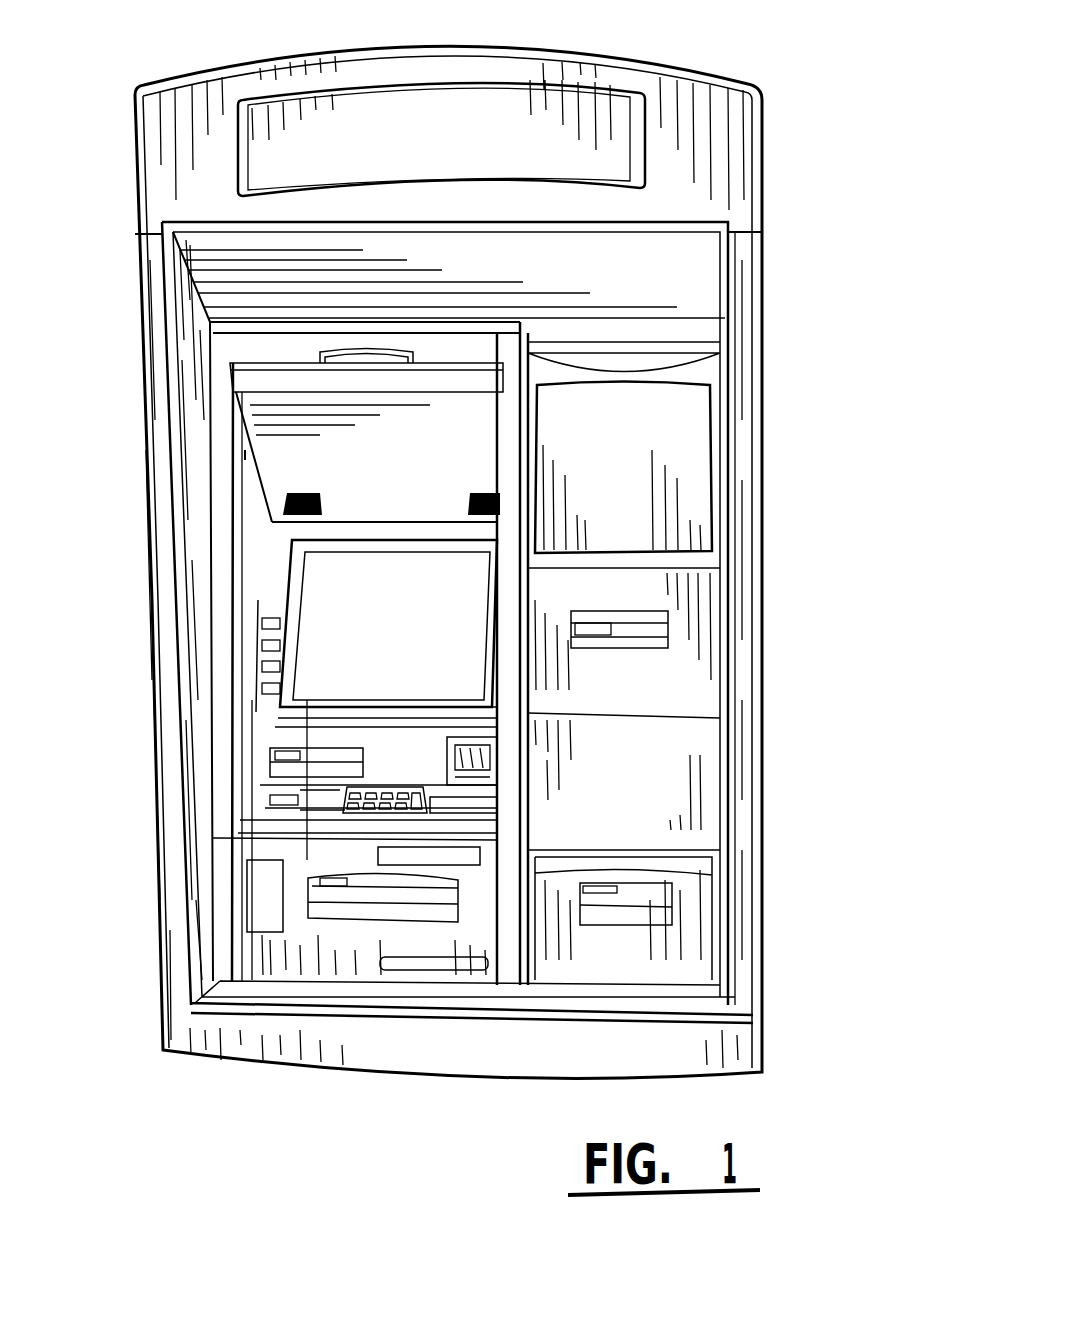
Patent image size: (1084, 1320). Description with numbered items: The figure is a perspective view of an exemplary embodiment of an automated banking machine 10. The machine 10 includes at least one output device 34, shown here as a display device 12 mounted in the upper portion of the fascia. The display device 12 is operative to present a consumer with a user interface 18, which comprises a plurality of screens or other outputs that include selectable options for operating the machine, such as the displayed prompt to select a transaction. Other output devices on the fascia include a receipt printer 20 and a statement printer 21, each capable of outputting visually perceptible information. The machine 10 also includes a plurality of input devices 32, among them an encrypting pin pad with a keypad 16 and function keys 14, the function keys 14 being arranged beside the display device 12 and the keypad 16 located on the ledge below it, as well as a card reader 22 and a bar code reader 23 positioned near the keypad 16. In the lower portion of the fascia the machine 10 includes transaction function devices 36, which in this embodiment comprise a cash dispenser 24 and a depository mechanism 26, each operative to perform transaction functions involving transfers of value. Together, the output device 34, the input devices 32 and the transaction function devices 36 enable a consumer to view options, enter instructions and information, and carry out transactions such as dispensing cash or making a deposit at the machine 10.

The automated banking machine 10 is at (785, 231).
The display device 12 is at (305, 608).
The function keys 14 is at (252, 712).
The keypad 16 is at (353, 800).
The user interface 18 is at (307, 668).
The receipt printer 20 is at (665, 627).
The statement printer 21 is at (272, 757).
The card reader 22 is at (475, 777).
The bar code reader 23 is at (467, 800).
The cash dispenser 24 is at (327, 905).
The depository mechanism 26 is at (653, 912).
The input devices 32 is at (248, 648).
The output device 34 is at (278, 555).
The transaction function devices 36 is at (577, 942).